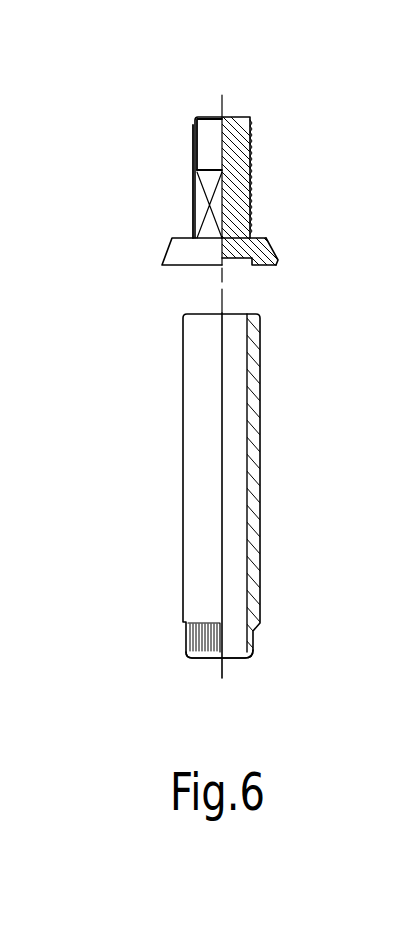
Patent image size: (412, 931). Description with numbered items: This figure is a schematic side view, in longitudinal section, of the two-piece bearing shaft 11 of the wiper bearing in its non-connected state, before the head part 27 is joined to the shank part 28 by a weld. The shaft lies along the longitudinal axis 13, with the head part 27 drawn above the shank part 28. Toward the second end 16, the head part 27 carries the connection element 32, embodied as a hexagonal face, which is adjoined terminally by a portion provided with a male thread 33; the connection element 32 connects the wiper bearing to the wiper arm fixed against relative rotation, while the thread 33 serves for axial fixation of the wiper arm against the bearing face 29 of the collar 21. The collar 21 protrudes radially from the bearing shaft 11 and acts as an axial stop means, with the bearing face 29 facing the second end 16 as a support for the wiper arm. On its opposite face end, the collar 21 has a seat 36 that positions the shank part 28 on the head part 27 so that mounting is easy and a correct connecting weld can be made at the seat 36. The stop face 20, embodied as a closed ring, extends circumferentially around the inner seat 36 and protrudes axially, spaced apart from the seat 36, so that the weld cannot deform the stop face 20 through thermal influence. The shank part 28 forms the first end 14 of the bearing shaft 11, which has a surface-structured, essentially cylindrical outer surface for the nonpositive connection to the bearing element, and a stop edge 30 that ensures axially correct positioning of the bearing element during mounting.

The bearing shaft 11 is at (272, 150).
The longitudinal axis 13 is at (223, 390).
The first end 14 is at (208, 660).
The second end 16 is at (195, 205).
The stop face 20 is at (268, 262).
The collar 21 is at (185, 257).
The head part 27 is at (187, 142).
The shank part 28 is at (175, 478).
The bearing face 29 is at (263, 239).
The stop edge 30 is at (188, 625).
The connection element 32 is at (197, 175).
The male thread 33 is at (193, 160).
The seat 36 is at (255, 266).